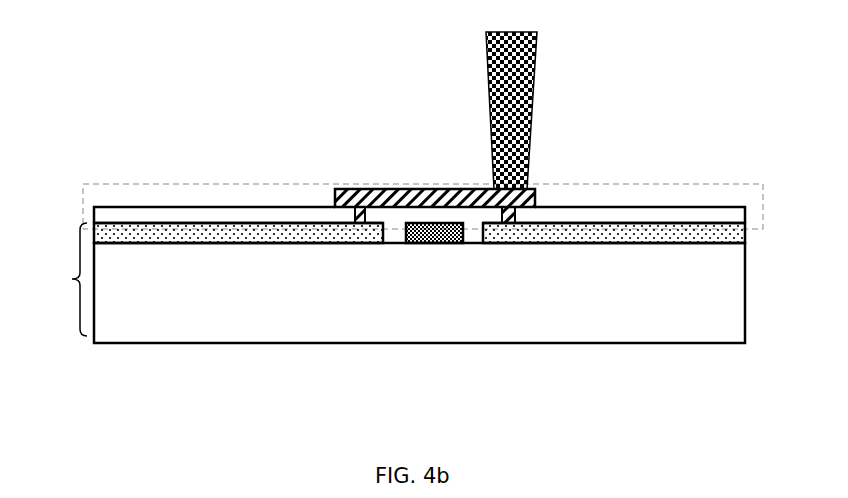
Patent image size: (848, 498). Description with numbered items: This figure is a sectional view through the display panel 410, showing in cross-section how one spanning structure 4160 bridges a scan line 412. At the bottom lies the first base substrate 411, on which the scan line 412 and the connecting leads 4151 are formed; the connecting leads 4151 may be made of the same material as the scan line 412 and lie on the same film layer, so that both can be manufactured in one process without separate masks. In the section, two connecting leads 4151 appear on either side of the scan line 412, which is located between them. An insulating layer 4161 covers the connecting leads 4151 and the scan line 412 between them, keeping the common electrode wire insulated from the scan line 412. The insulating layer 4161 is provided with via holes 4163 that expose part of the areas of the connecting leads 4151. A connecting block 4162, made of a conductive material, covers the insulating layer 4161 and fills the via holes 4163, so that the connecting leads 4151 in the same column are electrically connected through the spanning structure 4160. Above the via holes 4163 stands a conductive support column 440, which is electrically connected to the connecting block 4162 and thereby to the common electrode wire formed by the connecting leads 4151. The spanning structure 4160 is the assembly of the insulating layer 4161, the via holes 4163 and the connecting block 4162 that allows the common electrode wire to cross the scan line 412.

The display panel 410 is at (56, 279).
The first base substrate 411 is at (716, 303).
The scan line 412 is at (455, 243).
The connecting lead 4151 is at (257, 244).
The spanning structure 4160 is at (195, 184).
The insulating layer 4161 is at (671, 218).
The connecting block 4162 is at (536, 190).
The via hole 4163 is at (358, 214).
The conductive support column 440 is at (518, 91).